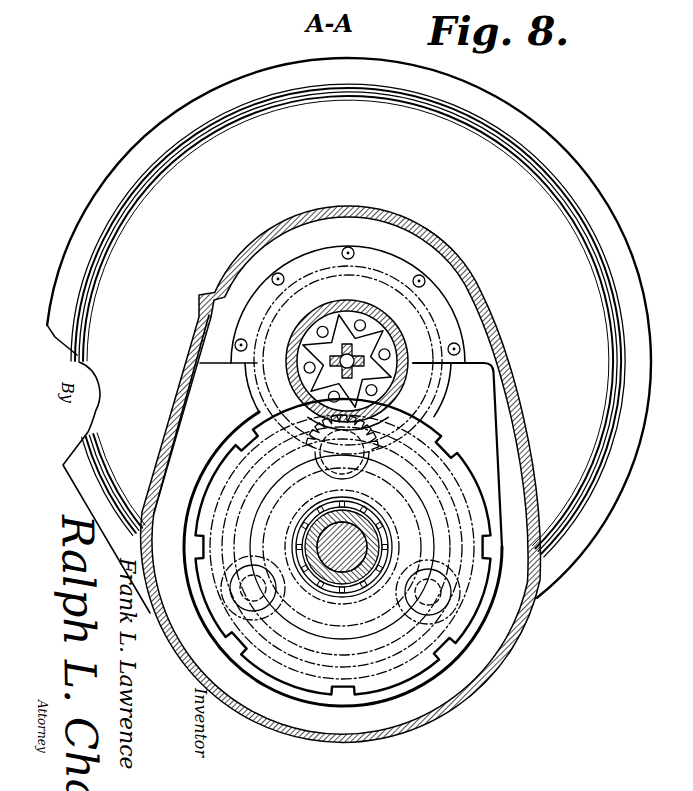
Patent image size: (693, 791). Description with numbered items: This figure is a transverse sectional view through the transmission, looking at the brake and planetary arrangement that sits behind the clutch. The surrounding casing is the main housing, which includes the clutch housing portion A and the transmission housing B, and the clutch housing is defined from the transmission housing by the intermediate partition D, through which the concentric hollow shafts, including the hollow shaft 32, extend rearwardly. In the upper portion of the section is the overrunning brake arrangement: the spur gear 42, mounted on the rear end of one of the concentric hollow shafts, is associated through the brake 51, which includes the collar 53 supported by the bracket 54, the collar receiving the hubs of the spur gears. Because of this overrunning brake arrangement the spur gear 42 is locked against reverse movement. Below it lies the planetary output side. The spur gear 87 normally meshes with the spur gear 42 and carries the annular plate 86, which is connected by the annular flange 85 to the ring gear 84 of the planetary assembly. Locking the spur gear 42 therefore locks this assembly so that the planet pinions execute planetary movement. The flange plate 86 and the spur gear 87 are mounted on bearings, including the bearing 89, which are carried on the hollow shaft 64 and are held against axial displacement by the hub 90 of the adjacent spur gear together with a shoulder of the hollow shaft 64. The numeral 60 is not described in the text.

The clutch housing portion A is at (155, 157).
The transmission housing B is at (530, 632).
The intermediate partition D is at (503, 437).
The concentric hollow shaft 32 is at (349, 353).
The spur gear 42 is at (422, 392).
The brake 51 is at (387, 332).
The collar 53 is at (296, 343).
The bracket 54 is at (436, 293).
The motor shaft 60 is at (348, 556).
The hollow shaft 64 is at (333, 574).
The ring gear 84 is at (367, 672).
The annular flange 85 is at (417, 680).
The annular plate 86 is at (470, 497).
The spur gear 87 is at (333, 620).
The bearing 89 is at (383, 526).
The hub 90 is at (303, 543).